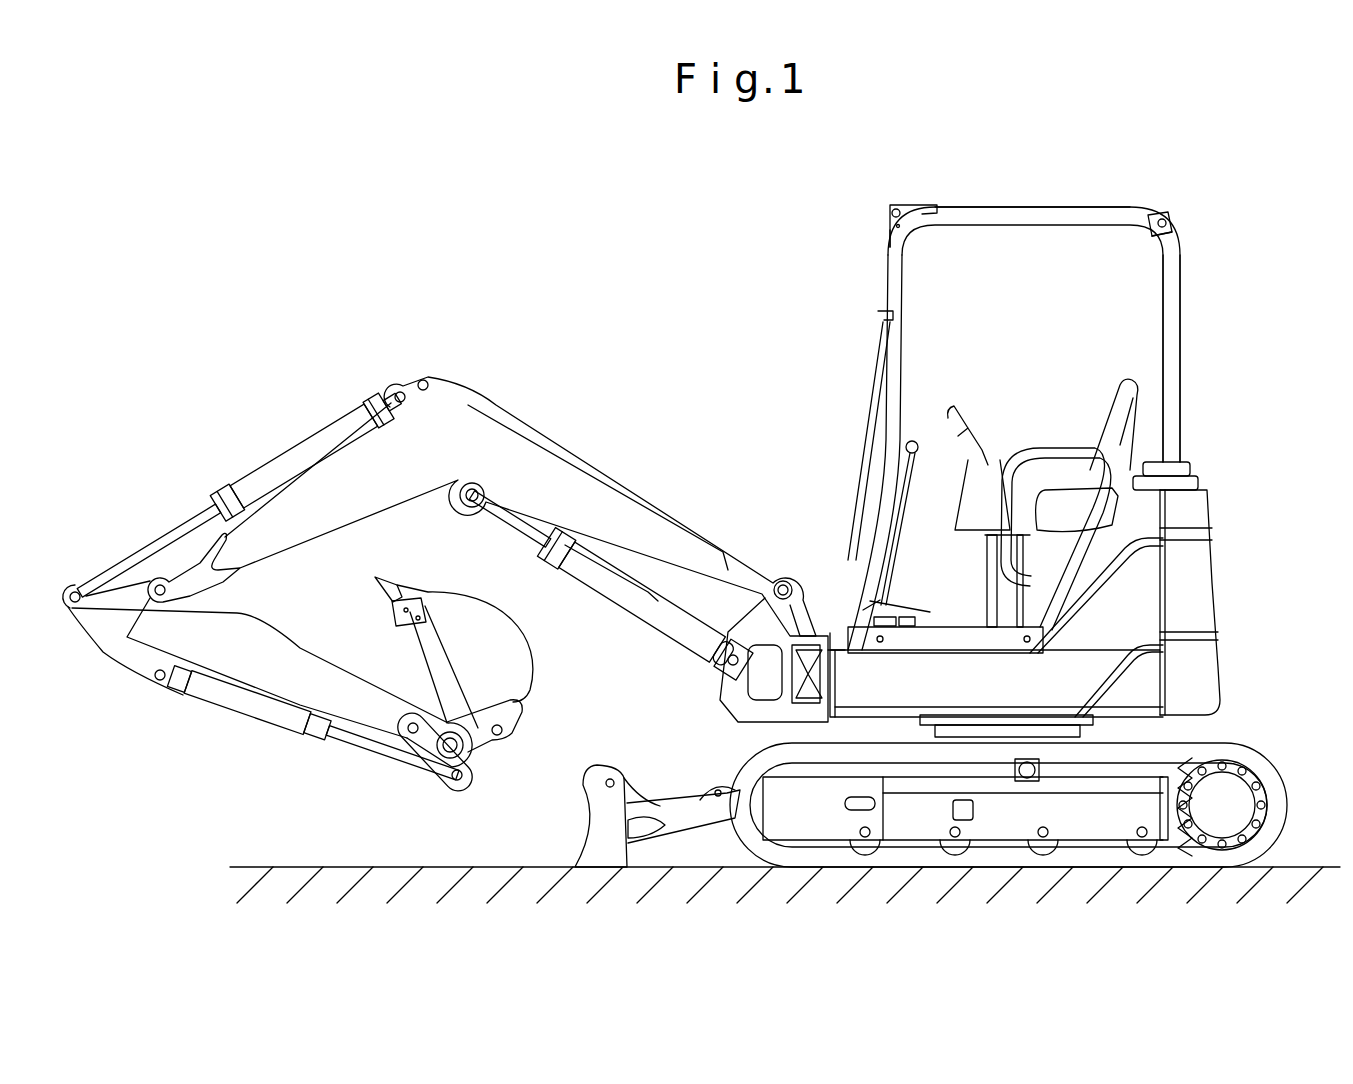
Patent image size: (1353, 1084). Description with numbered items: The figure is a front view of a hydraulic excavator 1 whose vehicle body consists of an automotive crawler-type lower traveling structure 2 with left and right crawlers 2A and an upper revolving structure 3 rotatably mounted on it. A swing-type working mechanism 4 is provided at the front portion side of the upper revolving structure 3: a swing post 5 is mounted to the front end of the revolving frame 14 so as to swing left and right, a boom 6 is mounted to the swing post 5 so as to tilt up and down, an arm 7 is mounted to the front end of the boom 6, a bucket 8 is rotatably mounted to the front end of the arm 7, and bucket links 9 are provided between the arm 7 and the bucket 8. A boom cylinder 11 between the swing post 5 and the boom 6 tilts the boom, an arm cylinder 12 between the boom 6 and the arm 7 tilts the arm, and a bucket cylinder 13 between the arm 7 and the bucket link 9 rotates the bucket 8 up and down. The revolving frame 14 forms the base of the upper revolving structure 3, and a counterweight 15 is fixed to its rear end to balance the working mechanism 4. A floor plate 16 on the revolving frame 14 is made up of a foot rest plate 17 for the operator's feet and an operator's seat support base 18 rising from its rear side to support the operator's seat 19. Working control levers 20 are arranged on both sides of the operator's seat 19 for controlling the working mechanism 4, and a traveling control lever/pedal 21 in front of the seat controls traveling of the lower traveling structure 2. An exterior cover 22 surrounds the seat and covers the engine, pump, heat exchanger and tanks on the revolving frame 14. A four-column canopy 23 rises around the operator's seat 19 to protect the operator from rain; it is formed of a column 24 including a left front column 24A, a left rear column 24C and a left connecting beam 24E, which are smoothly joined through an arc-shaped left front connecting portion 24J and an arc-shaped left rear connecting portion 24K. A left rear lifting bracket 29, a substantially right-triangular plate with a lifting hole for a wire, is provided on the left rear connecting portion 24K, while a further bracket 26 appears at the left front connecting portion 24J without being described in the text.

The hydraulic excavator 1 is at (716, 485).
The lower traveling structure 2 is at (1278, 802).
The crawler 2A is at (757, 766).
The upper revolving structure 3 is at (1215, 505).
The working mechanism 4 is at (497, 393).
The swing post 5 is at (737, 680).
The boom 6 is at (598, 470).
The arm 7 is at (305, 660).
The bucket 8 is at (482, 612).
The bucket link 9 is at (432, 770).
The boom cylinder 11 is at (628, 600).
The arm cylinder 12 is at (302, 452).
The bucket cylinder 13 is at (257, 712).
The revolving frame 14 is at (1148, 715).
The counterweight 15 is at (1208, 665).
The floor plate 16 is at (967, 617).
The foot rest plate 17 is at (940, 627).
The operator's seat support base 18 is at (1147, 551).
The operator's seat 19 is at (1130, 420).
The working control lever 20 is at (960, 433).
The traveling control lever/pedal 21 is at (900, 440).
The exterior cover 22 is at (1152, 608).
The canopy 23 is at (1083, 203).
The column 24 is at (1172, 272).
The left front column 24A is at (890, 289).
The left rear column 24C is at (1178, 357).
The left connecting beam 24E is at (998, 210).
The left front connecting portion 24J is at (903, 233).
The left rear connecting portion 24K is at (1165, 230).
The front bracket 26 is at (913, 205).
The left rear lifting bracket 29 is at (1158, 210).